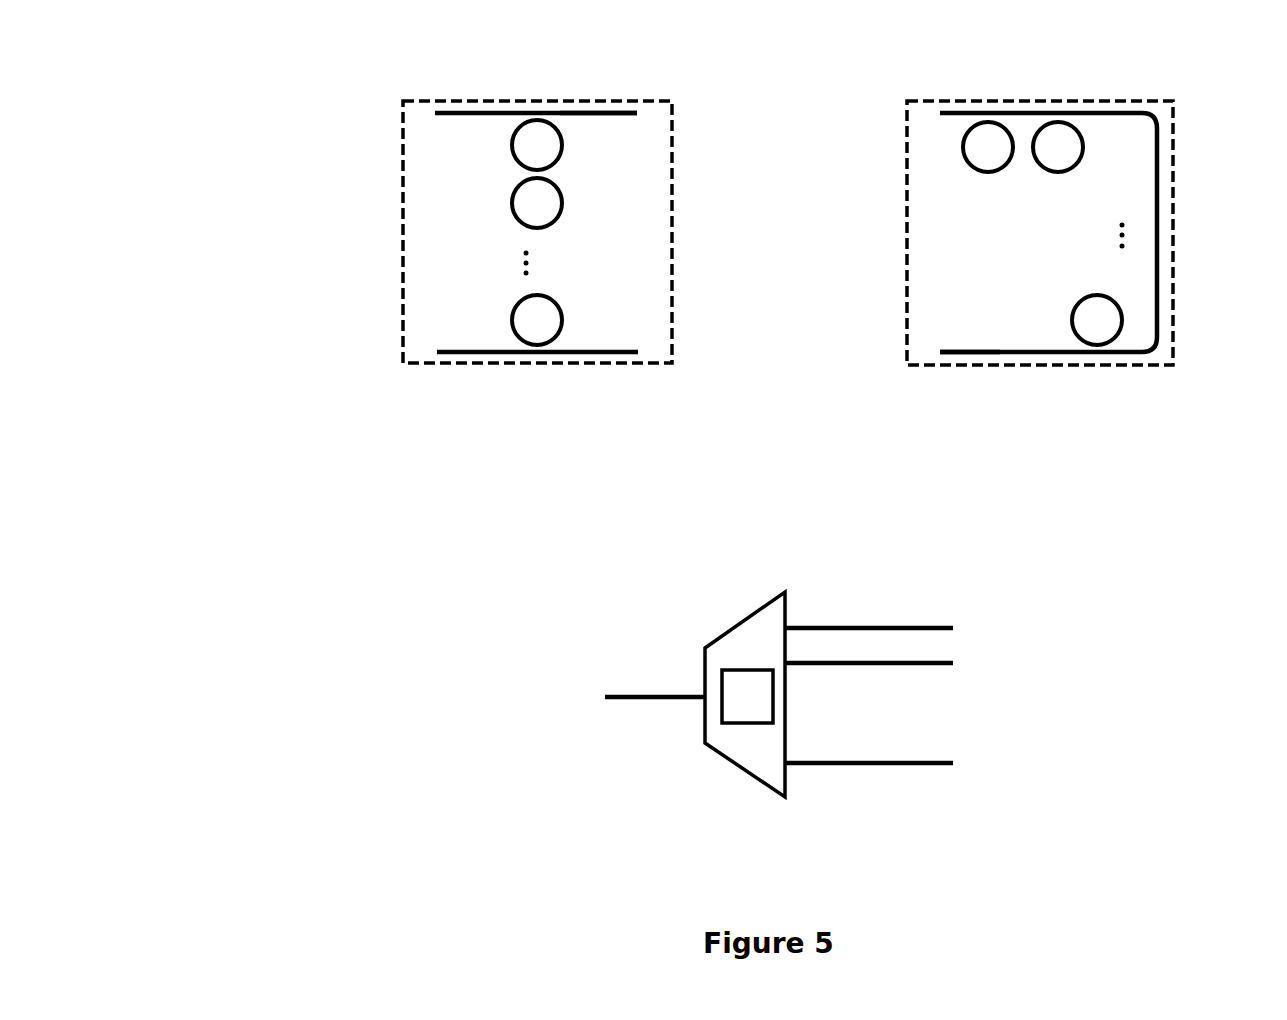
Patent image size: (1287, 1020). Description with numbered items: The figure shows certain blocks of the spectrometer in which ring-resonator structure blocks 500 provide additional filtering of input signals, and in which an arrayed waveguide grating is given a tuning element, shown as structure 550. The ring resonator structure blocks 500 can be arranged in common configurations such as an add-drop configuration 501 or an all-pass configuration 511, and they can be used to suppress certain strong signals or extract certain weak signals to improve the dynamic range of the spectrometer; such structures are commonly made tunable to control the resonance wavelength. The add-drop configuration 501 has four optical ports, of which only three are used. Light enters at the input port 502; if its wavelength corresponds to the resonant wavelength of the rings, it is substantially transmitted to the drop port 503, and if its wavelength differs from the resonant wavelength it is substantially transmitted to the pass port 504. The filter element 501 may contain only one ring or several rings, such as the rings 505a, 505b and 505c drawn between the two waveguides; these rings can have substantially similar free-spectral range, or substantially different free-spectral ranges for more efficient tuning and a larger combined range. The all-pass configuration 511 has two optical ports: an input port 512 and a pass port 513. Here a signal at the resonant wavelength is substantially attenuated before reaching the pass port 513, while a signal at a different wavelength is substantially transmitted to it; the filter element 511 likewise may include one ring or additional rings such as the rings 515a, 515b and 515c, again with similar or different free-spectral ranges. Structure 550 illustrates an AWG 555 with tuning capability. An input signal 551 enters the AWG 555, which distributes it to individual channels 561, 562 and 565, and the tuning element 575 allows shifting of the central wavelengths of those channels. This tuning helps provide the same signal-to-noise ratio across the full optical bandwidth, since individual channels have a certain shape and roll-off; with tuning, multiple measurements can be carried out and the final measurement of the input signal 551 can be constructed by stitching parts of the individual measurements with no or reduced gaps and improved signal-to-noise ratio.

The ring-resonator structure blocks 500 is at (352, 248).
The add-drop configuration 501 is at (402, 147).
The input port 502 is at (448, 112).
The drop port 503 is at (453, 352).
The pass port 504 is at (612, 112).
The ring 505a is at (563, 145).
The ring 505b is at (563, 203).
The ring 505c is at (563, 320).
The all-pass configuration 511 is at (907, 147).
The input port 512 is at (947, 110).
The pass port 513 is at (955, 358).
The ring 515a is at (1008, 127).
The ring 515b is at (1077, 127).
The ring 515c is at (1125, 323).
The tuning element structure 550 is at (427, 588).
The input signal 551 is at (605, 685).
The AWG 555 is at (727, 628).
The channel 561 is at (813, 627).
The channel 562 is at (833, 658).
The channel 565 is at (828, 767).
The tuning element 575 is at (720, 698).